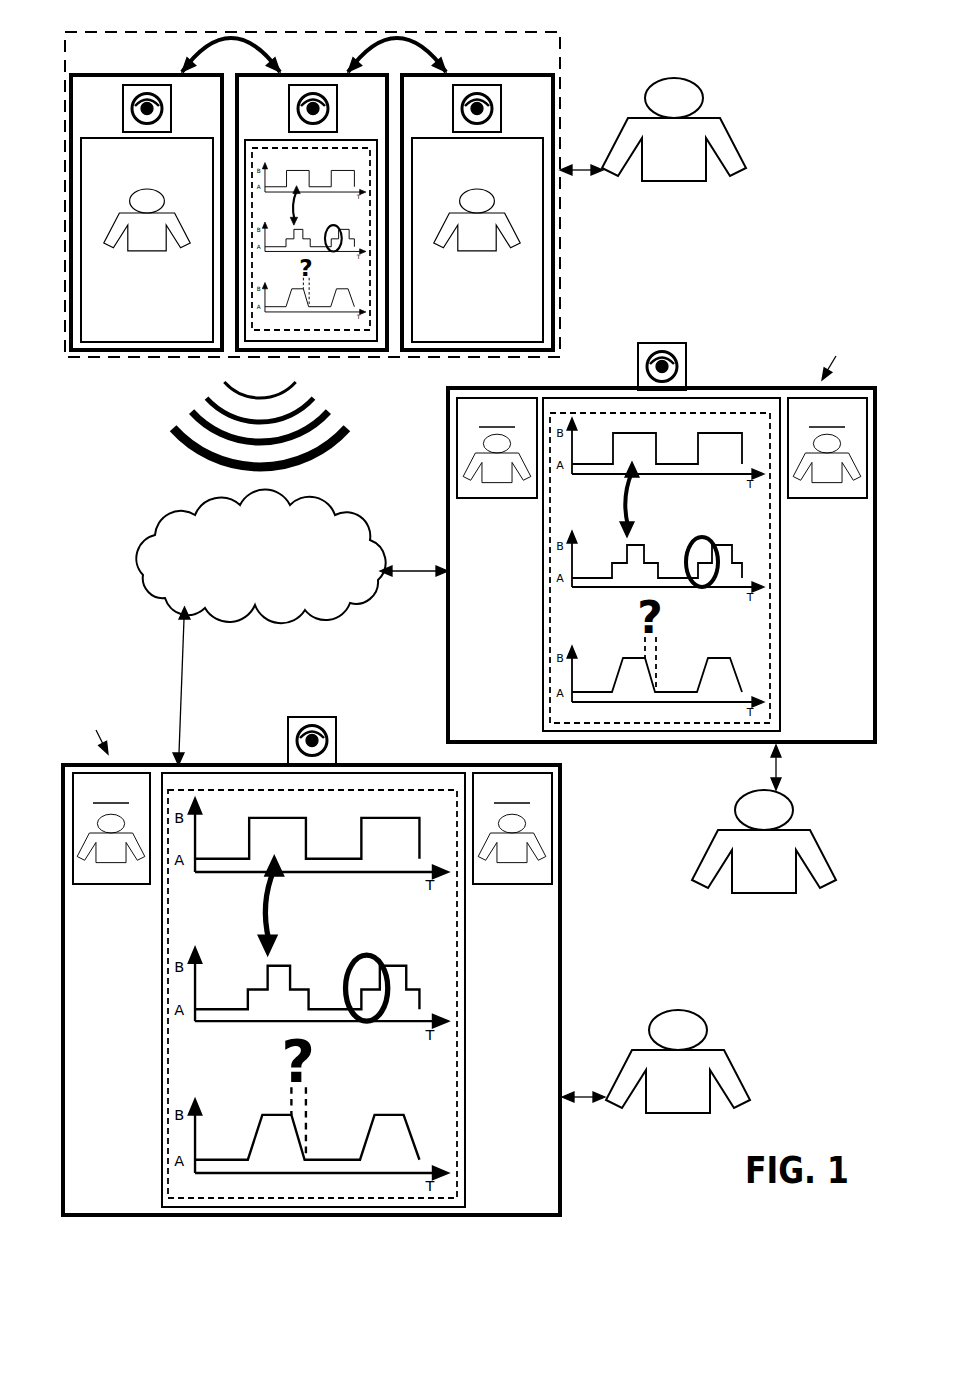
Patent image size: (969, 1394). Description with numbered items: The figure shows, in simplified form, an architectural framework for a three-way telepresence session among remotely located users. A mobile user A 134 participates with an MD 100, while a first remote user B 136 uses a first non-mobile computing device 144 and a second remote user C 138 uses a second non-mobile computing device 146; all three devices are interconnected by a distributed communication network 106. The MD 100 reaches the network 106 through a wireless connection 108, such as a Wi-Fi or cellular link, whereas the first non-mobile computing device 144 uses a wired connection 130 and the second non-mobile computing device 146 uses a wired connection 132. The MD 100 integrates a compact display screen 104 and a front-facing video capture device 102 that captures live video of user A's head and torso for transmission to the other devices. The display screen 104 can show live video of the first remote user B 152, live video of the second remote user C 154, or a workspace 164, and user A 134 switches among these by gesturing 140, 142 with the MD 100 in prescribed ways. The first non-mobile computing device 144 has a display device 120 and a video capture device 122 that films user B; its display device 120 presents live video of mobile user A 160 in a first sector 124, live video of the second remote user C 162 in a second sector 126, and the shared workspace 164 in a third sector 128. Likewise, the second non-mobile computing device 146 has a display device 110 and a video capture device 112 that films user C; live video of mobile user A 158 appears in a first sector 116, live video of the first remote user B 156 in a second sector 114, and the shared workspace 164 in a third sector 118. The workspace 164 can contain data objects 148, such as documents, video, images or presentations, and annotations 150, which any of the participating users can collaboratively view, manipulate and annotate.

The mobile device (MD) 100 is at (146, 232).
The front-facing video capture device 102 is at (123, 127).
The display screen 104 is at (143, 333).
The distributed communication network 106 is at (240, 554).
The wireless connection 108 is at (240, 428).
The display device 110 is at (661, 547).
The video capture device 112 is at (646, 351).
The second sector 114 is at (825, 466).
The first sector 116 is at (495, 466).
The third sector 118 is at (740, 411).
The display device 120 is at (311, 953).
The video capture device 122 is at (295, 723).
The first sector 124 is at (512, 845).
The second sector 126 is at (110, 845).
The third sector 128 is at (312, 961).
The wired connection 130 is at (185, 680).
The wired connection 132 is at (428, 580).
The mobile user A 134 is at (690, 196).
The first remote user B 136 is at (695, 1112).
The second remote user C 138 is at (780, 888).
The gesture 140 is at (365, 46).
The gesture 142 is at (199, 46).
The first non-mobile computing device 144 is at (92, 729).
The second non-mobile computing device 146 is at (840, 354).
The data object 148 is at (243, 1026).
The annotation 150 is at (368, 952).
The live video of first remote user B 152 is at (163, 251).
The live video of second remote user C 154 is at (493, 251).
The live video of first remote user B 156 is at (837, 484).
The live video of mobile user A 158 is at (507, 484).
The live video of mobile user A 160 is at (525, 863).
The live video of second remote user C 162 is at (125, 863).
The workspace 164 is at (447, 1095).